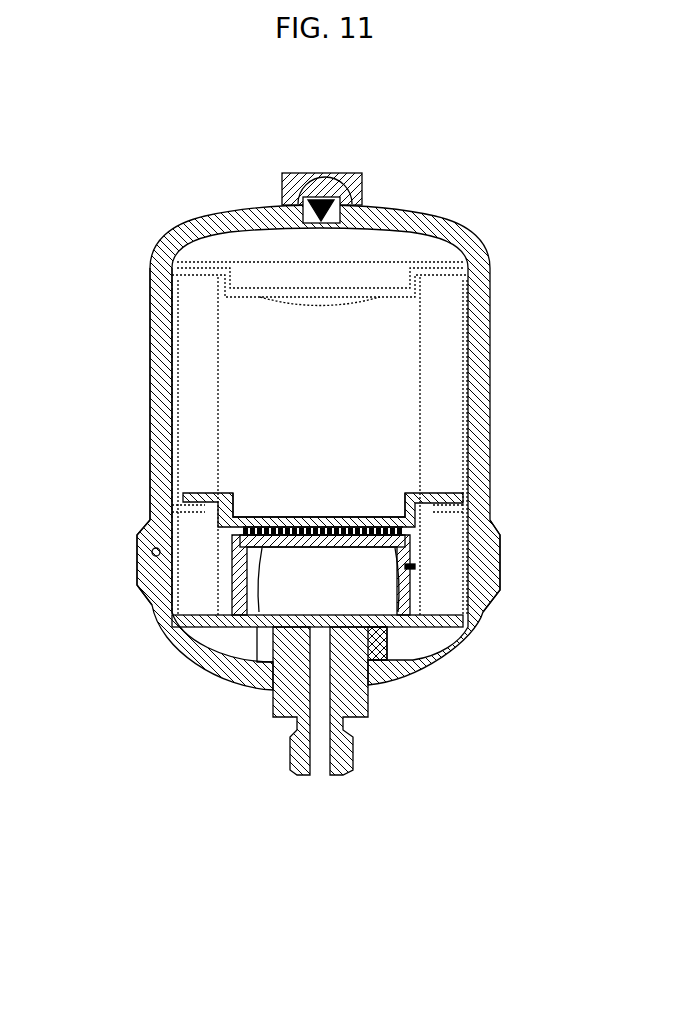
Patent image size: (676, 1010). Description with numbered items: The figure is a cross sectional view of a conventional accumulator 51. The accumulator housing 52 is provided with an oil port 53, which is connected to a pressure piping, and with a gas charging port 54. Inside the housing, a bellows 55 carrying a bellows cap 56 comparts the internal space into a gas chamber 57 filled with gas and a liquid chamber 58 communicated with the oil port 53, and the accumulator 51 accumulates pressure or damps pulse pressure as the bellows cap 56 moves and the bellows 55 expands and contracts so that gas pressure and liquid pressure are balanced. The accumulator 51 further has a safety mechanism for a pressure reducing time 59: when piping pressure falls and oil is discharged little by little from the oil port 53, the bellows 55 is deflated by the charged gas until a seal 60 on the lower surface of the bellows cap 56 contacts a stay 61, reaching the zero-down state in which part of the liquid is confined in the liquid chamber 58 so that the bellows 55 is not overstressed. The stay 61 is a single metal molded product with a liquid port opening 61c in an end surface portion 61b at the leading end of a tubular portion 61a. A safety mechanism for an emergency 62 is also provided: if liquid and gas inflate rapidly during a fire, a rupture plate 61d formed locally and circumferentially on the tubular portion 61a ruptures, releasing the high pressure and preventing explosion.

The accumulator 51 is at (480, 228).
The accumulator housing 52 is at (150, 318).
The oil port 53 is at (318, 763).
The gas charging port 54 is at (318, 172).
The bellows 55 is at (440, 549).
The bellows cap 56 is at (275, 512).
The gas chamber 57 is at (338, 398).
The liquid chamber 58 is at (235, 537).
The safety mechanism for a pressure reducing time 59 is at (228, 670).
The seal 60 is at (230, 552).
The stay 61 is at (232, 578).
The tubular portion 61a is at (488, 622).
The end surface portion 61b is at (362, 525).
The liquid port opening 61c is at (322, 523).
The rupture plate 61d is at (405, 600).
The safety mechanism for an emergency 62 is at (415, 567).